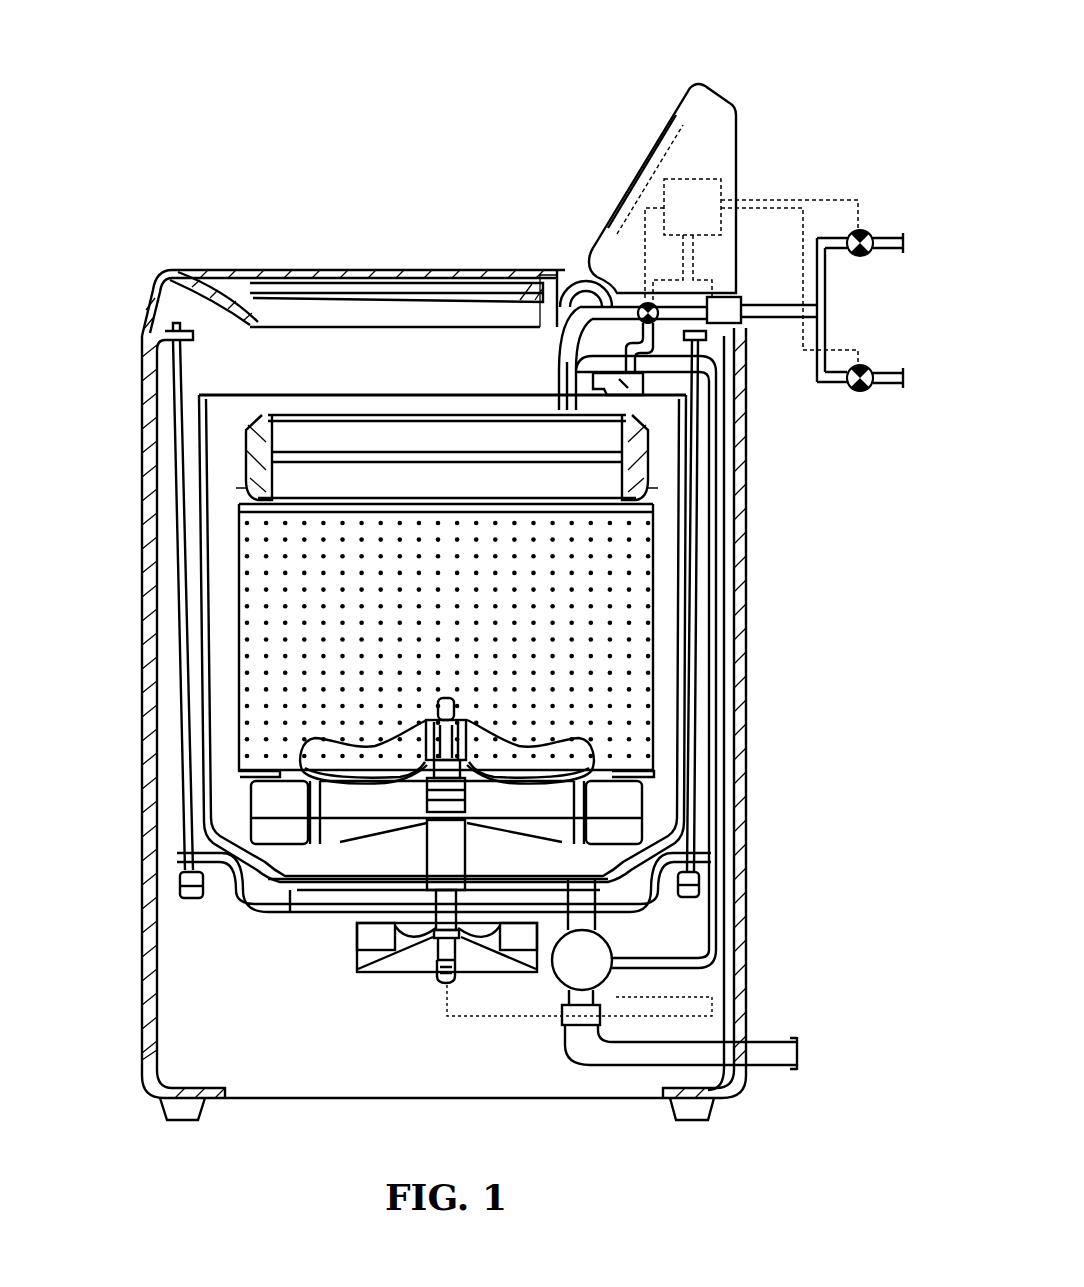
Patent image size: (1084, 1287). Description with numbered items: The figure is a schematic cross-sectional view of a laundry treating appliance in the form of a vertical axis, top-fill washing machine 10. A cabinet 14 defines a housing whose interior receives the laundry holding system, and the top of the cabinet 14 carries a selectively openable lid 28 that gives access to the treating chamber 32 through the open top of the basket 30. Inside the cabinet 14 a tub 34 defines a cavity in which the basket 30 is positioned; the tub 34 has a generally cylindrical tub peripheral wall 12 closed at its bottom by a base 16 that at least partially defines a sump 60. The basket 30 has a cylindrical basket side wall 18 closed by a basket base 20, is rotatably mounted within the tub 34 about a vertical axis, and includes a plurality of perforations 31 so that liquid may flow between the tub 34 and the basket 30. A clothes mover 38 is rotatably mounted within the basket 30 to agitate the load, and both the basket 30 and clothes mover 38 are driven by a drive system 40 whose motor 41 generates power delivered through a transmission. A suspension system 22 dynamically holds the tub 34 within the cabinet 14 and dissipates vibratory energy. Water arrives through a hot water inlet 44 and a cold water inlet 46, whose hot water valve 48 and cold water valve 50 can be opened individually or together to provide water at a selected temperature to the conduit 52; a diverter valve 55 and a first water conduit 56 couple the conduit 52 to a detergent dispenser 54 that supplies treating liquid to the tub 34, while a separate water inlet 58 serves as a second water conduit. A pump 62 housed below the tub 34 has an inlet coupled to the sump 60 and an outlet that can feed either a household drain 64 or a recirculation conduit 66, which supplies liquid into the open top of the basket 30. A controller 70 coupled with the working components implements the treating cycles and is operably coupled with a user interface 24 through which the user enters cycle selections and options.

The washing machine 10 is at (132, 171).
The tub peripheral wall 12 is at (200, 462).
The cabinet 14 is at (126, 318).
The base 16 is at (300, 913).
The basket side wall 18 is at (447, 596).
The basket base 20 is at (345, 844).
The suspension system 22 is at (699, 903).
The user interface 24 is at (655, 120).
The lid 28 is at (357, 270).
The basket 30 is at (238, 607).
The perforations 31 is at (611, 590).
The treating chamber 32 is at (535, 640).
The tub 34 is at (186, 513).
The clothes mover 38 is at (521, 761).
The drive system 40 is at (425, 918).
The motor 41 is at (503, 963).
The hot water inlet 44 is at (890, 238).
The cold water inlet 46 is at (893, 387).
The hot water valve 48 is at (867, 256).
The cold water valve 50 is at (863, 392).
The conduit 52 is at (780, 305).
The detergent dispenser 54 is at (712, 400).
The diverter valve 55 is at (645, 304).
The first water conduit 56 is at (720, 355).
The water inlet 58 is at (556, 335).
The sump 60 is at (659, 865).
The pump 62 is at (575, 966).
The household drain 64 is at (760, 1052).
The recirculation conduit 66 is at (720, 690).
The controller 70 is at (700, 195).